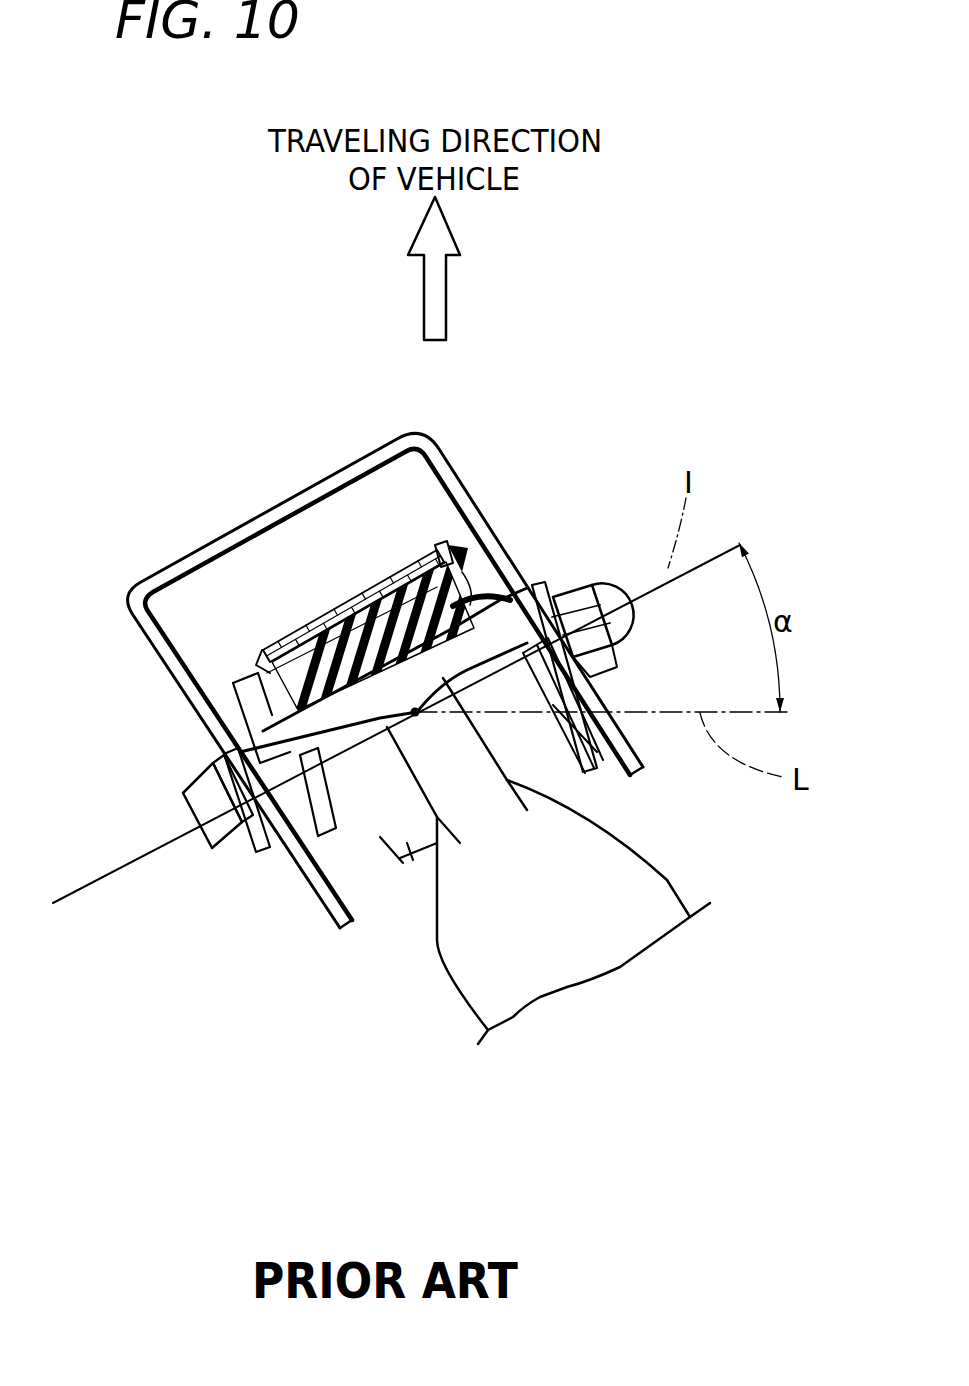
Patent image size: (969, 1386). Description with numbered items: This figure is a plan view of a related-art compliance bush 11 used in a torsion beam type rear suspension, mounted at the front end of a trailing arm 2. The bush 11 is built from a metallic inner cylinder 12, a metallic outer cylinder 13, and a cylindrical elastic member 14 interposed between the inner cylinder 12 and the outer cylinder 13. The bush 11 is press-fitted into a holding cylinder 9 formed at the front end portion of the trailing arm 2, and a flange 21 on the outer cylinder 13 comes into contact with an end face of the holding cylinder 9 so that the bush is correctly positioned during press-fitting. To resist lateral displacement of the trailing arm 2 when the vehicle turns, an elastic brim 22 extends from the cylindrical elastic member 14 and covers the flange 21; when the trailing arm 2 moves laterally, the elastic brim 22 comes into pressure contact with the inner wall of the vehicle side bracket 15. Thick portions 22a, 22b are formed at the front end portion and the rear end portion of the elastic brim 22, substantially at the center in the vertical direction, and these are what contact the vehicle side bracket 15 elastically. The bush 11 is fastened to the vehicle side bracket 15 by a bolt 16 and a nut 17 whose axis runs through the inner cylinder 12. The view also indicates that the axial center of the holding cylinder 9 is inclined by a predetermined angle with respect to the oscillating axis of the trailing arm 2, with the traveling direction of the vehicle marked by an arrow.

The trailing arm 2 is at (688, 873).
The holding cylinder 9 is at (413, 860).
The bush 11 is at (235, 658).
The inner cylinder 12 is at (272, 735).
The outer cylinder 13 is at (300, 650).
The cylindrical elastic member 14 is at (377, 620).
The vehicle side bracket 15 is at (178, 678).
The bolt 16 is at (205, 858).
The nut 17 is at (578, 592).
The flange 21 is at (440, 543).
The elastic brim 22 is at (615, 727).
The thick portion 22a is at (492, 553).
The thick portion 22b is at (588, 758).